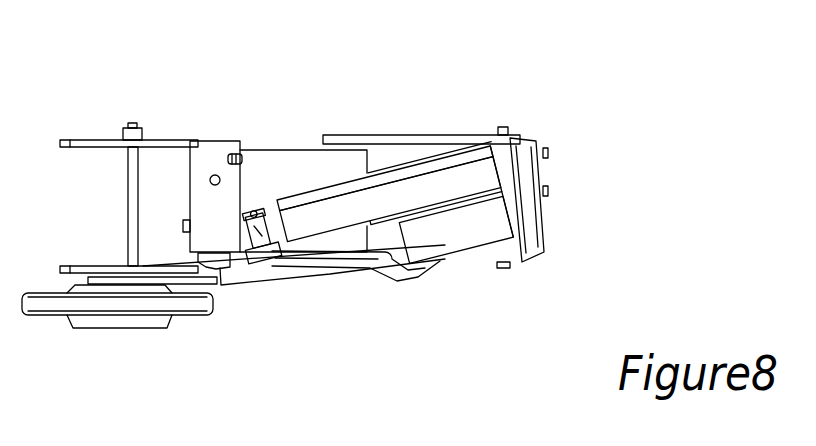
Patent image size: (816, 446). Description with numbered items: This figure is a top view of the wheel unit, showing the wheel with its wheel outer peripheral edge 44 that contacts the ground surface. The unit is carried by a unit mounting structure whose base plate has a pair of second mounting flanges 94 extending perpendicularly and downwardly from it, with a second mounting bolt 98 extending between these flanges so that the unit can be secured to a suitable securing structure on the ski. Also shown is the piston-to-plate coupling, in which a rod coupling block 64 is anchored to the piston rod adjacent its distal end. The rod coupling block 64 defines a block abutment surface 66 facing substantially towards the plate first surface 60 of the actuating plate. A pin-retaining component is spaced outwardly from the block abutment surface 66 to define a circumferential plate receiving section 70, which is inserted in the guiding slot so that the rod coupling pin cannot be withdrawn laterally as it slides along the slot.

The wheel outer peripheral edge 44 is at (63, 305).
The plate first surface 60 is at (392, 251).
The rod coupling block 64 is at (272, 238).
The block abutment surface 66 is at (267, 267).
The plate receiving section 70 is at (280, 265).
The second mounting flanges 94 is at (70, 140).
The second mounting bolt 98 is at (135, 178).